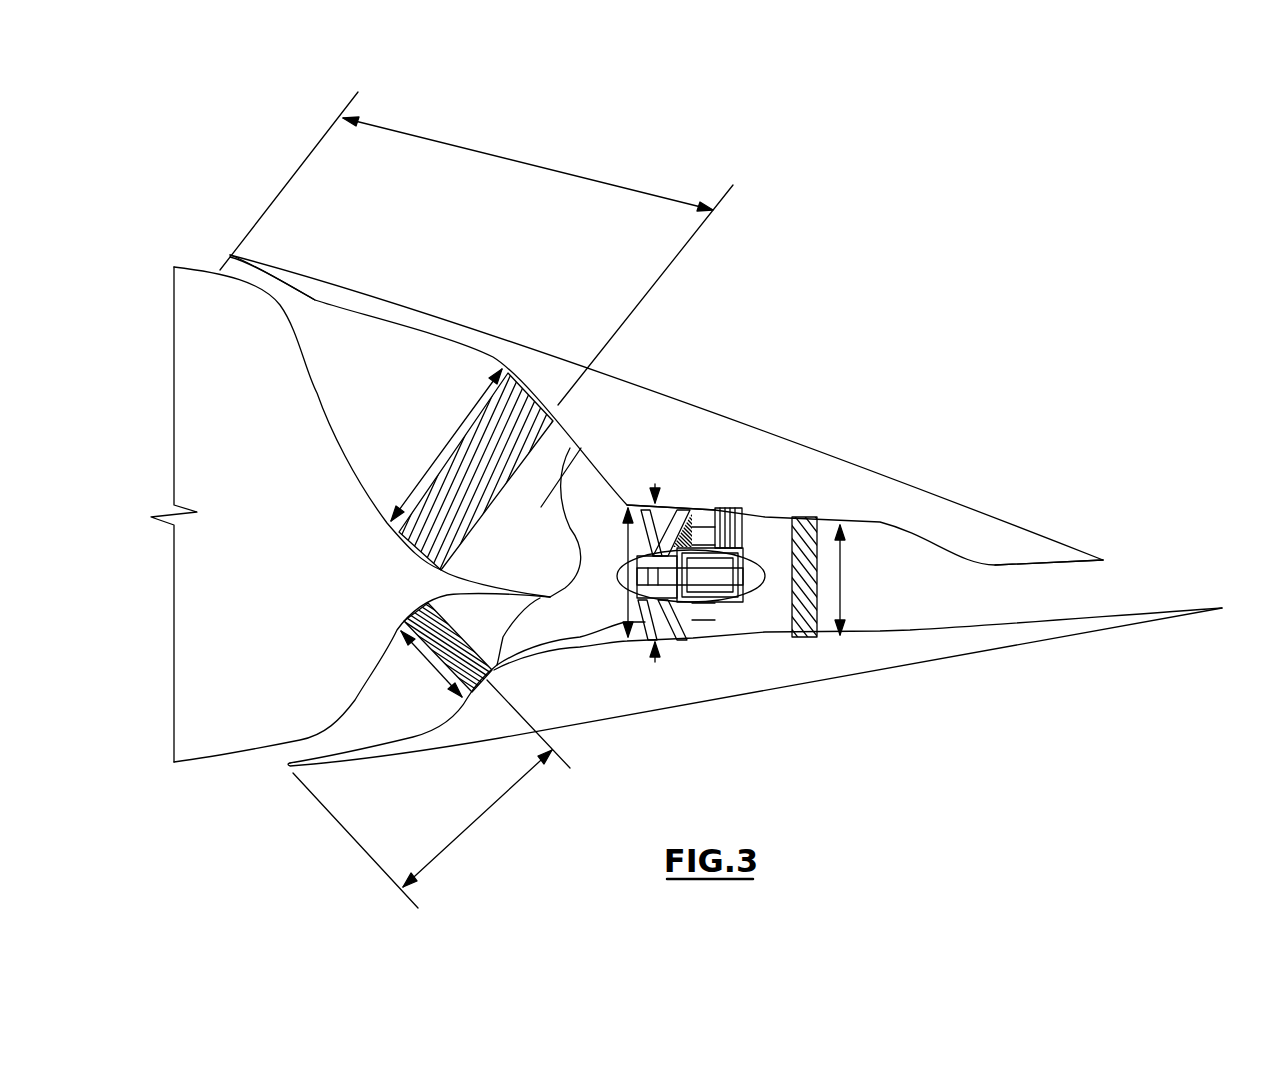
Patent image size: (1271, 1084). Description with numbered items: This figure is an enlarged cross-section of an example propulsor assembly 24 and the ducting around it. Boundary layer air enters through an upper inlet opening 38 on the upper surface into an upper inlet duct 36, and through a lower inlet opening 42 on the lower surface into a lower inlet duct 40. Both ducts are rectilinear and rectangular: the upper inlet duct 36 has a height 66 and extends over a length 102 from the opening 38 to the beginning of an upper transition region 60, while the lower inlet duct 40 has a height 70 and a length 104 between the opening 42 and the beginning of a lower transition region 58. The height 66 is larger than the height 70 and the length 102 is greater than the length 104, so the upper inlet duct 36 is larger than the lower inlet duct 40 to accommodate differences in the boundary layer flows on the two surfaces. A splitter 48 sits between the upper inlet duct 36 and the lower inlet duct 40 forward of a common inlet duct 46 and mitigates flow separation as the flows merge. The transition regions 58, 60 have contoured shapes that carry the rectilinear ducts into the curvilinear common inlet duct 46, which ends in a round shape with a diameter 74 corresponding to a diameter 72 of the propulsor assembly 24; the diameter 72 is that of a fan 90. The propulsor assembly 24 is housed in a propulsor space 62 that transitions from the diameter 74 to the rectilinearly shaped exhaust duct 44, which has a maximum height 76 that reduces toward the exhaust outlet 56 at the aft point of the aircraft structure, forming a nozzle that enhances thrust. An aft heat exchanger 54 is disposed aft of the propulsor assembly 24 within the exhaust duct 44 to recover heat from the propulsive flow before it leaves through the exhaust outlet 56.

The propulsor assembly 24 is at (726, 614).
The upper inlet duct 36 is at (404, 368).
The upper inlet opening 38 is at (222, 262).
The lower inlet duct 40 is at (395, 706).
The lower inlet opening 42 is at (277, 757).
The exhaust duct 44 is at (920, 597).
The common inlet duct 46 is at (620, 527).
The splitter 48 is at (545, 598).
The aft heat exchanger 54 is at (808, 612).
The exhaust outlet 56 is at (1130, 566).
The lower transition region 58 is at (483, 643).
The upper transition region 60 is at (570, 448).
The propulsor space 62 is at (648, 483).
The height of upper inlet duct 66 is at (446, 450).
The height of lower inlet duct 70 is at (436, 690).
The diameter of propulsor assembly 72 is at (655, 662).
The diameter of common inlet duct 74 is at (627, 637).
The maximum height of exhaust duct 76 is at (842, 580).
The fan 90 is at (660, 627).
The length of upper inlet duct 102 is at (527, 163).
The length of lower inlet duct 104 is at (444, 853).